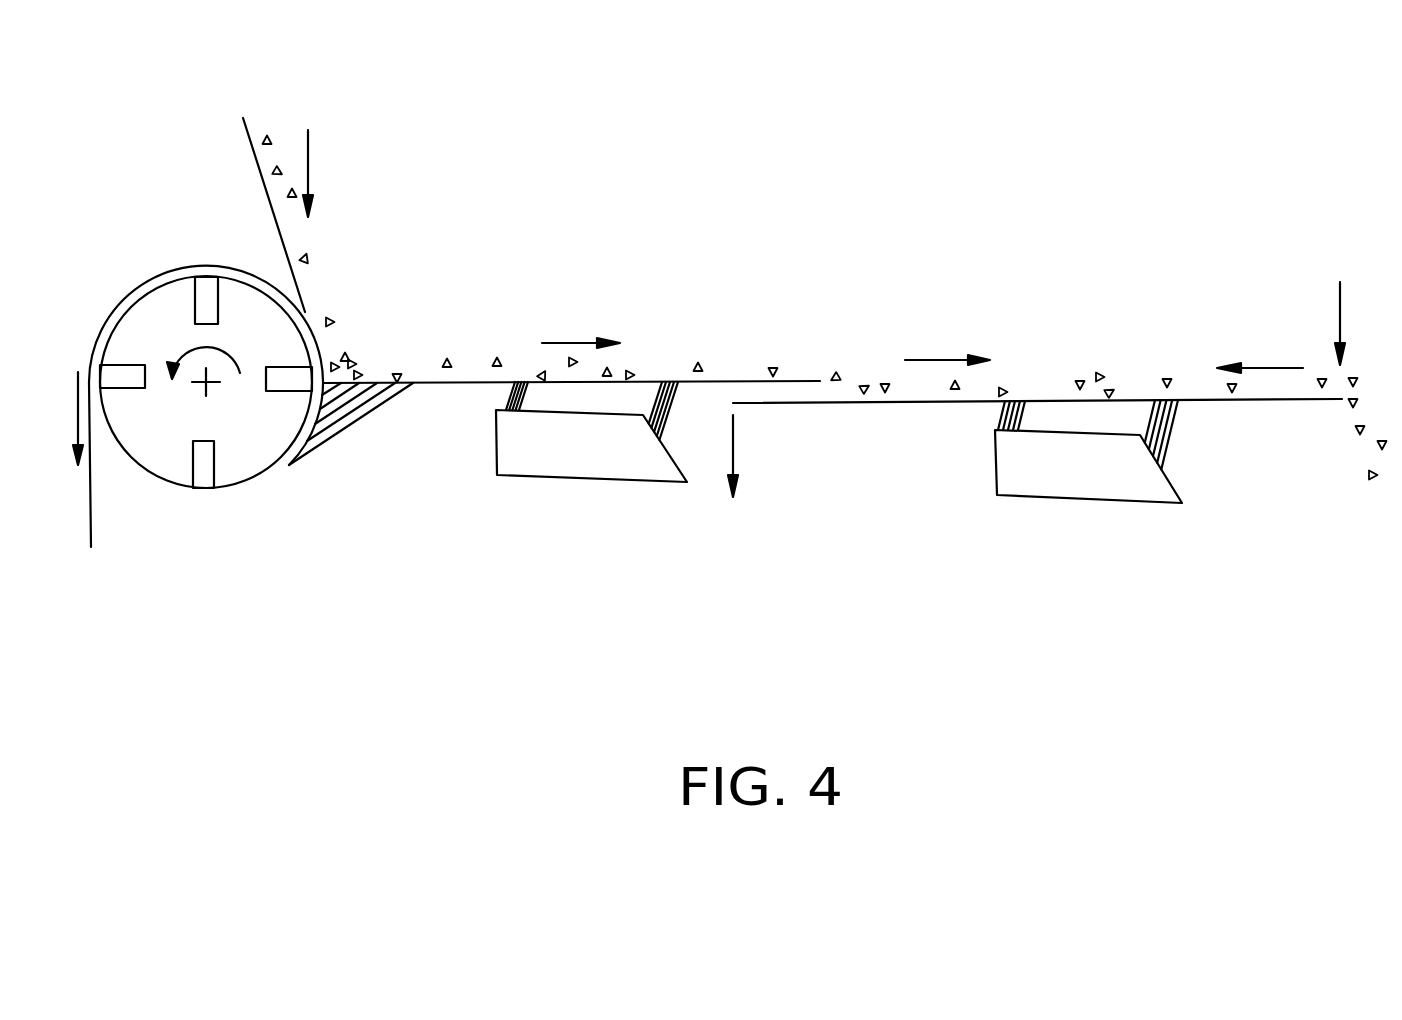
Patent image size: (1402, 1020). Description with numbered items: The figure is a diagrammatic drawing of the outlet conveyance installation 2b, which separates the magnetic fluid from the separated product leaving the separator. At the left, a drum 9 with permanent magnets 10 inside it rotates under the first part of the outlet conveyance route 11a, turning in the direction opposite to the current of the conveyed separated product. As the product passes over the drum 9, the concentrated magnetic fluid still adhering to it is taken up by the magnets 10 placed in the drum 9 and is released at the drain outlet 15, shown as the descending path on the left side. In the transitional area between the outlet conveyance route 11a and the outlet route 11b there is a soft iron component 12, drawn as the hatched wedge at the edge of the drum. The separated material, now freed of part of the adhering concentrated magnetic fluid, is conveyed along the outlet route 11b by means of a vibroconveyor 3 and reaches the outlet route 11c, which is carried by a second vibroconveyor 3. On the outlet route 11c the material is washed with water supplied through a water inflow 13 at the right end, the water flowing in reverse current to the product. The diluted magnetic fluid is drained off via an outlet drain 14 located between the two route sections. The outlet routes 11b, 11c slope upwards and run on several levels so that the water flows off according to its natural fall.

The outlet conveyance installation 2b is at (393, 333).
The vibroconveyor 3 is at (587, 467).
The drum 9 is at (258, 450).
The permanent magnets 10 is at (202, 473).
The outlet conveyance route 11a is at (151, 273).
The outlet route 11b is at (503, 380).
The outlet route 11c is at (1057, 397).
The soft iron component 12 is at (357, 412).
The water inflow 13 is at (1306, 303).
The outlet drain 14 is at (739, 485).
The drain outlet 15 is at (68, 452).